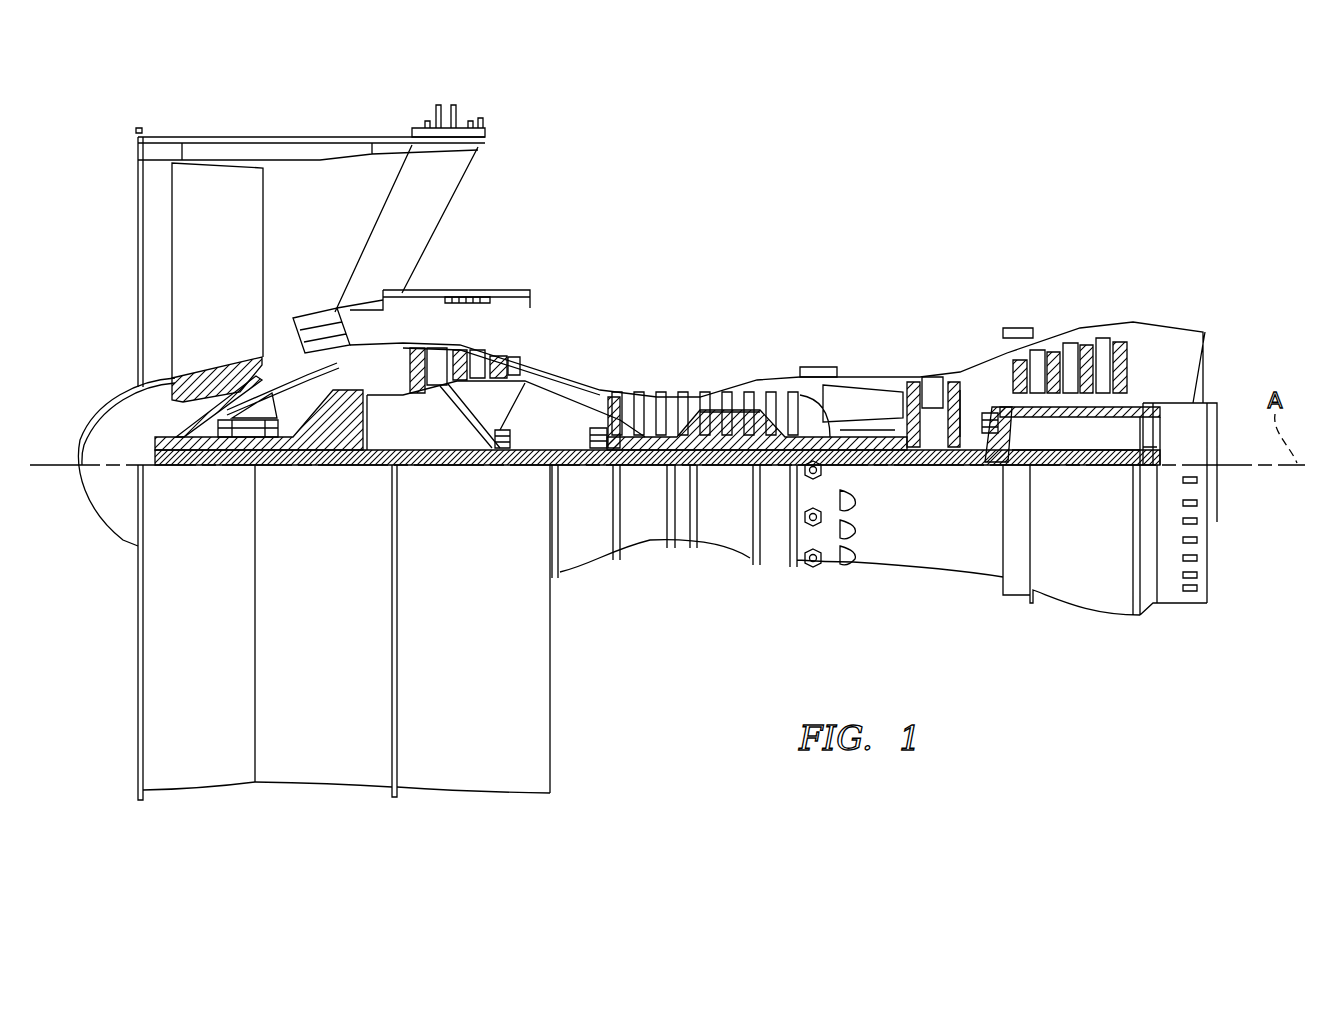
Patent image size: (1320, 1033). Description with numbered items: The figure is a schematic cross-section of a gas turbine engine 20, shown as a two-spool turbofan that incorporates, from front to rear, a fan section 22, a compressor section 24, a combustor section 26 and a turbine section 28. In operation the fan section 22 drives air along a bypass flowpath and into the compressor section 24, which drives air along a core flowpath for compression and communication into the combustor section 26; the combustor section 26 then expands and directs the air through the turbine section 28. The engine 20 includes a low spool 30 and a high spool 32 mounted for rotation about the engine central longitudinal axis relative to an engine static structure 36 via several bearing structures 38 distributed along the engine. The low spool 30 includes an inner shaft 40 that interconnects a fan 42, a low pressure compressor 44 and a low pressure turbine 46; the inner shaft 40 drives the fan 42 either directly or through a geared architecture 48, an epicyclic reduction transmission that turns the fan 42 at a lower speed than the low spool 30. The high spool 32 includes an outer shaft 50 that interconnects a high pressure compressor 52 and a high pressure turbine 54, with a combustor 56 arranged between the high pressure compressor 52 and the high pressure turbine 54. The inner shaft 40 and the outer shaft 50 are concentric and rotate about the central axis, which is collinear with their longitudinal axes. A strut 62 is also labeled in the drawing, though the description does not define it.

The gas turbine engine 20 is at (890, 182).
The fan section 22 is at (392, 113).
The compressor section 24 is at (402, 257).
The combustor section 26 is at (800, 257).
The turbine section 28 is at (1145, 257).
The low spool 30 is at (730, 466).
The high spool 32 is at (773, 423).
The engine static structure 36 is at (778, 563).
The bearing structures 38 is at (228, 437).
The inner shaft 40 is at (582, 463).
The fan 42 is at (196, 283).
The low pressure compressor 44 is at (473, 358).
The low pressure turbine 46 is at (1070, 342).
The geared architecture 48 is at (350, 438).
The outer shaft 50 is at (843, 447).
The high pressure compressor 52 is at (713, 430).
The high pressure turbine 54 is at (932, 368).
The combustor 56 is at (855, 403).
The mid-turbine frame / strut 62 is at (393, 147).